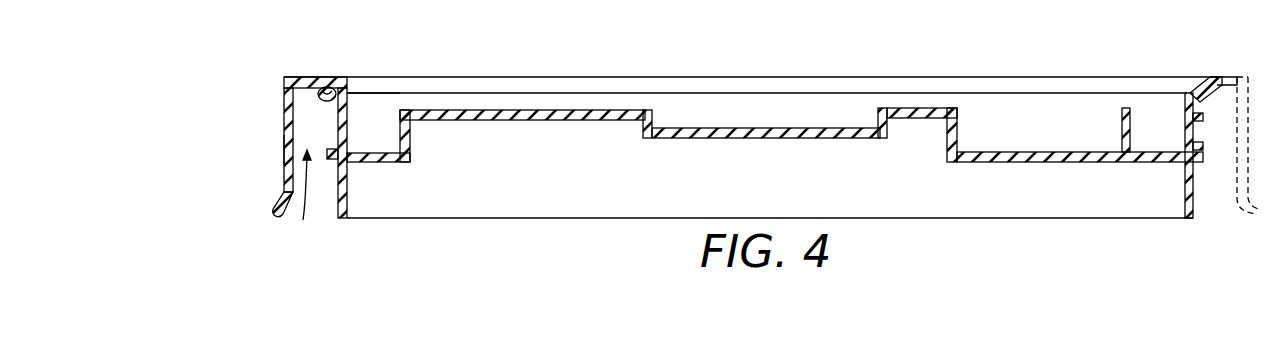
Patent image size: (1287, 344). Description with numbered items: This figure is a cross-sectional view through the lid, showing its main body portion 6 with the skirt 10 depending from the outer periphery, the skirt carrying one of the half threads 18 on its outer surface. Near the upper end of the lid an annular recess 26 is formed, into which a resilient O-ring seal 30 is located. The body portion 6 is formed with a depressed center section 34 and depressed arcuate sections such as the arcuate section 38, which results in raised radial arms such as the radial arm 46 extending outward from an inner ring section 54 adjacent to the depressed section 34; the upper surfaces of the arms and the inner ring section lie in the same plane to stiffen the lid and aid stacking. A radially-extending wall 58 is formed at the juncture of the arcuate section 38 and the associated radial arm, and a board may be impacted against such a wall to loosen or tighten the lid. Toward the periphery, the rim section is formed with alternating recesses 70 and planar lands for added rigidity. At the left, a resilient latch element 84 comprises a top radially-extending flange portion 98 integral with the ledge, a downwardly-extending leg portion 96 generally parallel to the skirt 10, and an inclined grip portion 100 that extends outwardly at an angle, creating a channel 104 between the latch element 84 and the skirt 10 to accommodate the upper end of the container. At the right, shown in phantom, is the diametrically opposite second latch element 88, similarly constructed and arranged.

The main body portion 6 is at (348, 125).
The skirt 10 is at (347, 208).
The half thread 18 is at (328, 160).
The annular recess 26 is at (1232, 75).
The O-ring seal 30 is at (322, 92).
The depressed center section 34 is at (748, 130).
The depressed arcuate section 38 is at (1040, 152).
The radial arm 46 is at (488, 110).
The inner ring section 54 is at (915, 108).
The radially-extending wall 58 is at (953, 137).
The recess 70 is at (357, 147).
The latch element 84 is at (284, 148).
The second latch element 88 is at (1252, 134).
The leg portion 96 is at (287, 120).
The flange portion 98 is at (308, 97).
The grip portion 100 is at (283, 204).
The channel 104 is at (295, 198).